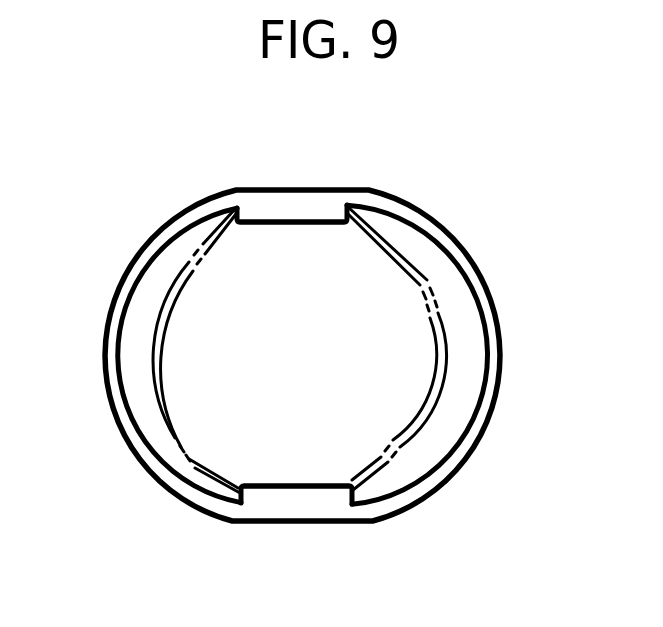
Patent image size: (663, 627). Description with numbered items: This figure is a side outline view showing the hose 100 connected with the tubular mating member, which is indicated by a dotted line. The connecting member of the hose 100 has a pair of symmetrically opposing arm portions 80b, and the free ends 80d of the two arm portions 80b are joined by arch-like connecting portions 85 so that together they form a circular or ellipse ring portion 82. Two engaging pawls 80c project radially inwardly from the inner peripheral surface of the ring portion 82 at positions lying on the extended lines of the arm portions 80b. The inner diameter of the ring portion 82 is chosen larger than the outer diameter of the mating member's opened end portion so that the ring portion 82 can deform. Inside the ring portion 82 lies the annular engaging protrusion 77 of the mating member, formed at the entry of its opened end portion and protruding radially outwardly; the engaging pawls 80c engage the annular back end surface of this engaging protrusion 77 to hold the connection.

The hose 100 is at (444, 185).
The ring portion 82 is at (494, 455).
The arch-like connecting portions 85 is at (441, 230).
The arm portion 80b is at (290, 197).
The free ends 80d is at (288, 512).
The engaging pawls 80c is at (294, 222).
The annular engaging protrusion 77 is at (437, 353).